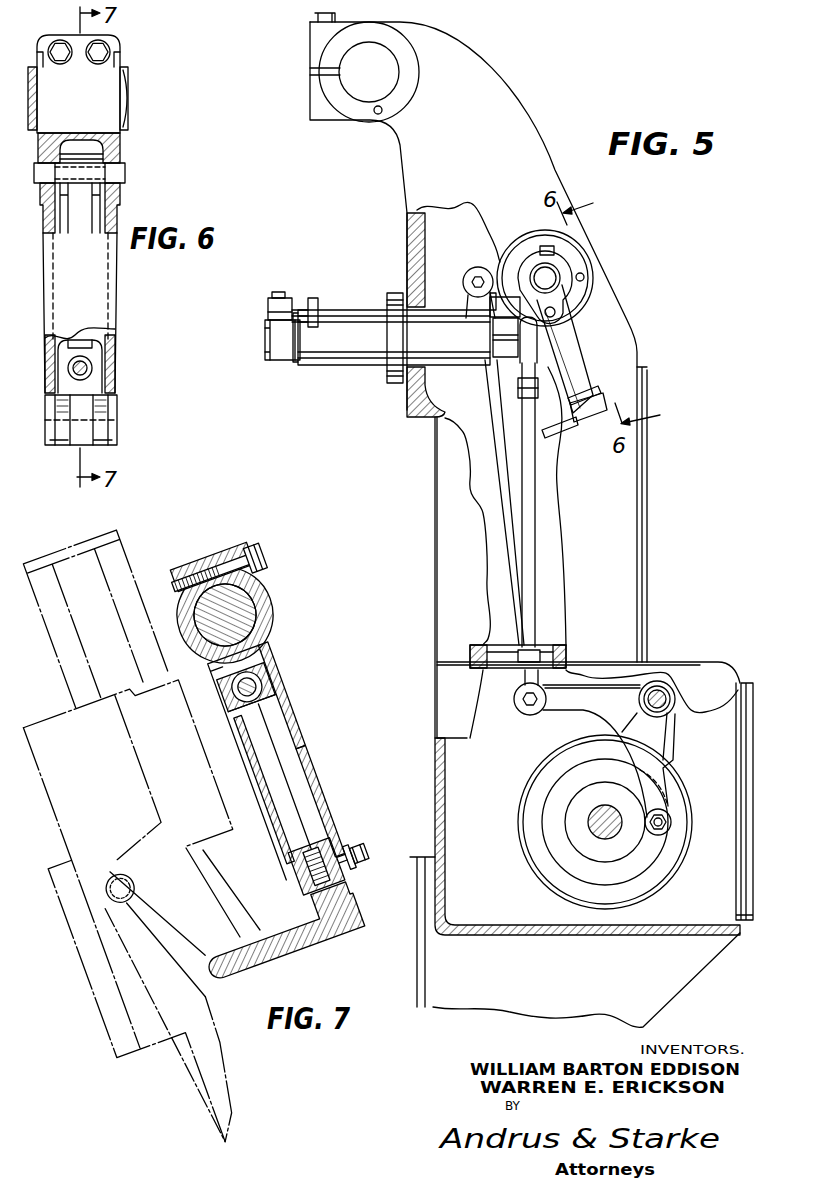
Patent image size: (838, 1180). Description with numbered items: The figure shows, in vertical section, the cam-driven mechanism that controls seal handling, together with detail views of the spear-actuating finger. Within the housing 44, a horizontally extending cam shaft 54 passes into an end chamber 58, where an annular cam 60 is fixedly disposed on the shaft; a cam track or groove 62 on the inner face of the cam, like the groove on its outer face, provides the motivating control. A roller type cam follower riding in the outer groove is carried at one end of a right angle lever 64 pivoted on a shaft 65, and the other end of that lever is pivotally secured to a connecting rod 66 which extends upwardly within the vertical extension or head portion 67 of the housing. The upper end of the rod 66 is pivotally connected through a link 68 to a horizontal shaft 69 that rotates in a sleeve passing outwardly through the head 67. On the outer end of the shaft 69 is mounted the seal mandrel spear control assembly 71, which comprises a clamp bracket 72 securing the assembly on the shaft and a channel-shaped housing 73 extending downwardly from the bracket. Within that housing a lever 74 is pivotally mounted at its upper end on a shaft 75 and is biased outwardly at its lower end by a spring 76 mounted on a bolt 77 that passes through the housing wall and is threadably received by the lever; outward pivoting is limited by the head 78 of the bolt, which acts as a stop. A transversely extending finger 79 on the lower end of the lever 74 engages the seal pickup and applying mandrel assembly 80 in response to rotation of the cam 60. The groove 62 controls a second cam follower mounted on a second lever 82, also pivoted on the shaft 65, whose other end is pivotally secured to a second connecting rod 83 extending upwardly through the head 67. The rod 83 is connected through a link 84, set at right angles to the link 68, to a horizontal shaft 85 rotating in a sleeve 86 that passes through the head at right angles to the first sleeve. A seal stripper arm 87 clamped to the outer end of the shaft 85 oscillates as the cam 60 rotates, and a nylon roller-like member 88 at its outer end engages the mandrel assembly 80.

In FIG. 5, the housing 44 is at (718, 673).
In FIG. 5, the cam shaft 54 is at (615, 828).
In FIG. 5, the end chamber 58 is at (478, 775).
In FIG. 5, the annular cam 60 is at (548, 878).
In FIG. 5, the cam track or groove 62 is at (628, 875).
In FIG. 5, the right angle lever 64 is at (680, 743).
In FIG. 5, the shaft 65 is at (657, 697).
In FIG. 5, the connecting rod 66 is at (508, 562).
In FIG. 5, the vertical extension or head portion 67 is at (432, 407).
In FIG. 5, the link 68 is at (497, 272).
In FIG. 5, the horizontal shaft 69 is at (548, 282).
In FIG. 6, the seal mandrel spear control assembly 71 is at (121, 318).
In FIG. 5, the seal mandrel spear control assembly 71 is at (590, 361).
In FIG. 7, the seal mandrel spear control assembly 71 is at (304, 709).
In FIG. 6, the clamp bracket 72 is at (98, 94).
In FIG. 5, the clamp bracket 72 is at (552, 262).
In FIG. 7, the clamp bracket 72 is at (262, 600).
In FIG. 6, the channel-shaped housing 73 is at (45, 373).
In FIG. 5, the channel-shaped housing 73 is at (590, 383).
In FIG. 7, the channel-shaped housing 73 is at (317, 782).
In FIG. 6, the lever 74 is at (80, 342).
In FIG. 5, the lever 74 is at (575, 398).
In FIG. 7, the lever 74 is at (265, 807).
In FIG. 6, the shaft 75 is at (122, 173).
In FIG. 7, the shaft 75 is at (258, 685).
In FIG. 7, the spring 76 is at (318, 858).
In FIG. 6, the bolt 77 is at (87, 368).
In FIG. 7, the bolt 77 is at (297, 870).
In FIG. 7, the head 78 is at (355, 842).
In FIG. 5, the finger 79 is at (572, 420).
In FIG. 7, the finger 79 is at (275, 950).
In FIG. 7, the seal pickup and applying mandrel assembly 80 is at (96, 1014).
In FIG. 5, the second lever 82 is at (578, 705).
In FIG. 5, the second connecting rod 83 is at (535, 560).
In FIG. 5, the link 84 is at (500, 360).
In FIG. 5, the horizontal shaft 85 is at (265, 338).
In FIG. 5, the sleeve 86 is at (360, 364).
In FIG. 5, the seal stripper arm 87 is at (283, 350).
In FIG. 5, the roller-like member 88 is at (313, 298).